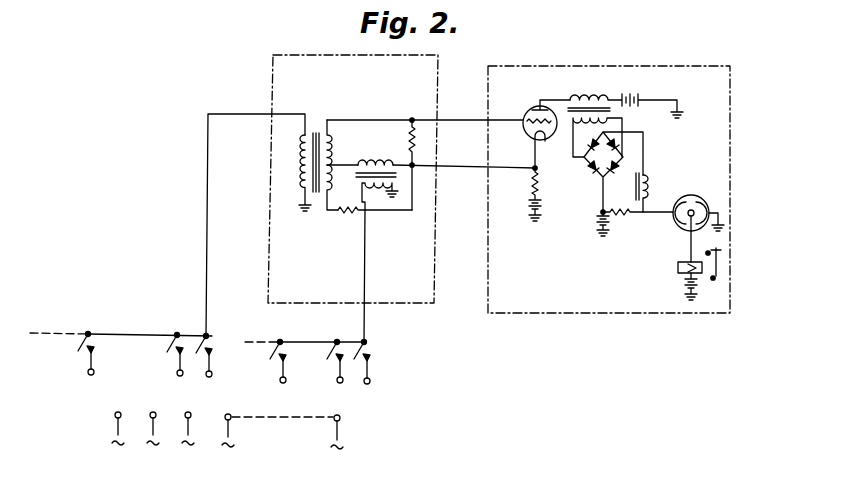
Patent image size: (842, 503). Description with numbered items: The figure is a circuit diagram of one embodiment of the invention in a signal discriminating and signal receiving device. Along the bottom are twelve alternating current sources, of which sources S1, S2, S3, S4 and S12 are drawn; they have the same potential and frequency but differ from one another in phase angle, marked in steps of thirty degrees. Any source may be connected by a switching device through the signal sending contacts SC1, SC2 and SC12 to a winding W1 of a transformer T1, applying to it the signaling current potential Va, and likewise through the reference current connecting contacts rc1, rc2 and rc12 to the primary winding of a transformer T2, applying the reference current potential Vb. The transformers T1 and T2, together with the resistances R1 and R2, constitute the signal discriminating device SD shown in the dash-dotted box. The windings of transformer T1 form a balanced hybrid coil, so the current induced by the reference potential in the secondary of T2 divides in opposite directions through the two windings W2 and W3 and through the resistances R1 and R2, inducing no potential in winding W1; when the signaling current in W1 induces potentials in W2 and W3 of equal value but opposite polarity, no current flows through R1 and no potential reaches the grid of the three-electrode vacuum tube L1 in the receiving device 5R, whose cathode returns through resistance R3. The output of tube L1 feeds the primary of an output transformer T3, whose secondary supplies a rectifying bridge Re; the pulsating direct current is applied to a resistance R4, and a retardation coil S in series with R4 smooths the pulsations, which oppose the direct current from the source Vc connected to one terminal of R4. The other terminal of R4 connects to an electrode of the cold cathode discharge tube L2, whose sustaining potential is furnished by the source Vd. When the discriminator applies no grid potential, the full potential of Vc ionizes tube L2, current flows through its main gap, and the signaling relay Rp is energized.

The signal discriminating device SD is at (353, 179).
The signal receiving device 5R is at (609, 189).
The signaling current potential Va is at (241, 225).
The reference current potential Vb is at (379, 276).
The transformer T1 is at (320, 146).
The winding of transformer T1 W1 is at (294, 173).
The winding of transformer T1 W2 is at (344, 142).
The winding of transformer T1 W3 is at (343, 187).
The transformer T2 is at (377, 176).
The resistance R1 is at (423, 164).
The resistance R2 is at (375, 223).
The three-electrode vacuum tube L1 is at (540, 129).
The cathode resistance R3 is at (523, 193).
The output transformer T3 is at (625, 114).
The rectifying bridge Re is at (604, 173).
The source Vc is at (588, 223).
The resistance R4 is at (638, 202).
The retardation coil S is at (651, 192).
The cold cathode discharge tube L2 is at (698, 219).
The signaling relay Rp is at (688, 264).
The source Vd is at (676, 288).
The signal sending contact SC12 is at (71, 361).
The signal sending contact SC2 is at (164, 362).
The signal sending contact SC1 is at (199, 361).
The reference current connecting contact rc12 is at (273, 368).
The reference current connecting contact rc2 is at (329, 368).
The reference current connecting contact rc1 is at (357, 367).
The alternating current source S1 is at (112, 429).
The alternating current source S2 is at (152, 429).
The alternating current source S3 is at (189, 429).
The alternating current source S4 is at (274, 430).
The alternating current source S12 is at (343, 433).